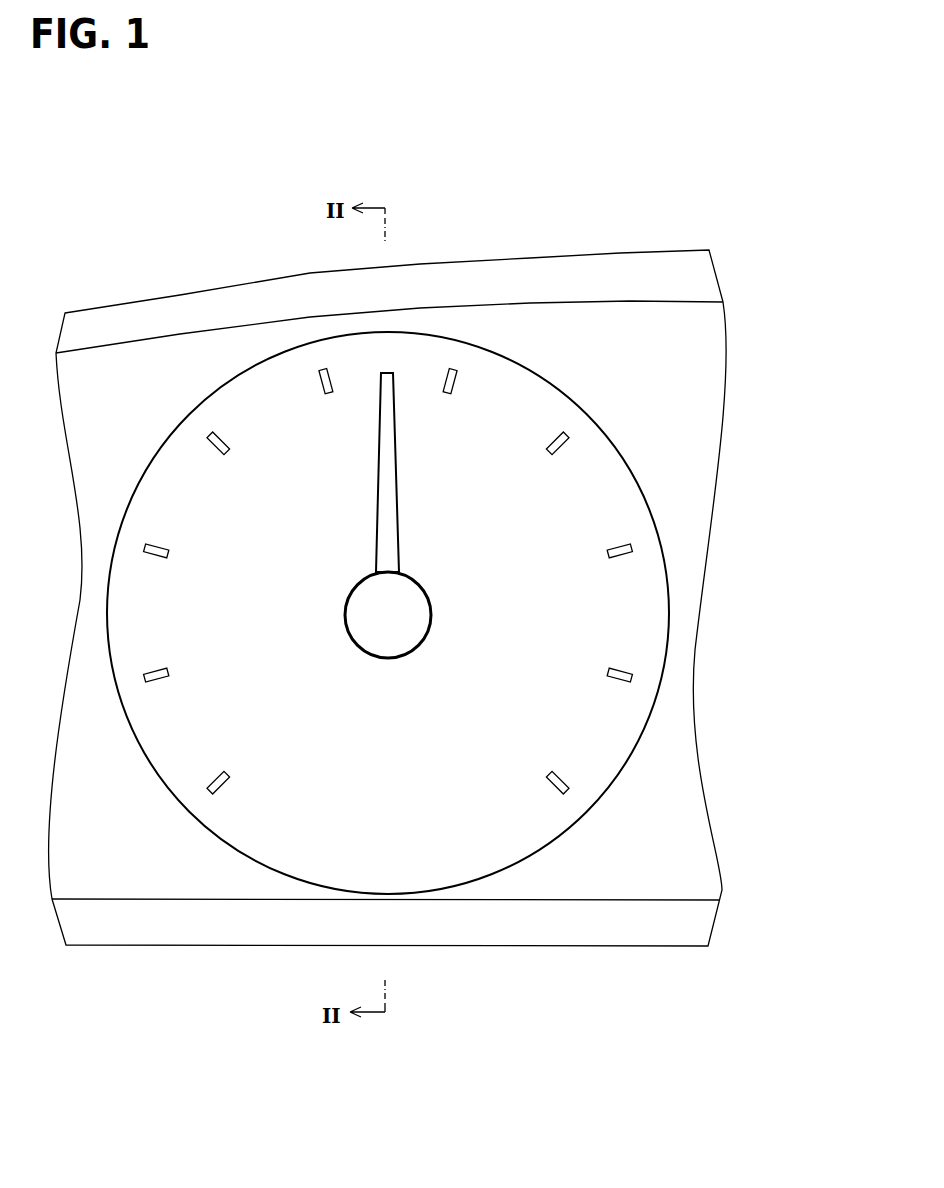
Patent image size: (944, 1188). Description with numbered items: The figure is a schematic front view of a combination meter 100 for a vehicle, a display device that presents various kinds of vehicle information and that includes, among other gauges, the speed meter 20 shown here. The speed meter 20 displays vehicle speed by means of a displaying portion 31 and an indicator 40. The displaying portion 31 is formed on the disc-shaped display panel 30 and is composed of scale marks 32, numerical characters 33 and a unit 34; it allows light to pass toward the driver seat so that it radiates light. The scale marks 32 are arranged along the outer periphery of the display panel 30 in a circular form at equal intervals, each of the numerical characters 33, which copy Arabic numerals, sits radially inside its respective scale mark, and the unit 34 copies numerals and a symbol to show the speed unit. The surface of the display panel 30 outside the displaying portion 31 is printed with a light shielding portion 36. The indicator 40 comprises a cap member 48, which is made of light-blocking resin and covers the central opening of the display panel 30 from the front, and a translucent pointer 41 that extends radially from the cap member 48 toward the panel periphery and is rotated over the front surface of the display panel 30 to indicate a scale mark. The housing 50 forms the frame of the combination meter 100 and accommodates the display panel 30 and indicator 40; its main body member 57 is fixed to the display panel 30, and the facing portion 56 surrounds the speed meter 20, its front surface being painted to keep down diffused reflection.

The combination meter 100 is at (744, 201).
The speed meter 20 is at (200, 368).
The display panel 30 is at (613, 720).
The displaying portion 31 is at (597, 1005).
The scale marks 32 is at (567, 797).
The numerical characters 33 is at (530, 768).
The unit 34 is at (423, 727).
The light shielding portion 36 is at (582, 750).
The indicator 40 is at (396, 410).
The pointer 41 is at (446, 389).
The cap member 48 is at (431, 615).
The housing 50 is at (722, 886).
The facing portion 56 is at (662, 797).
The main body member 57 is at (445, 600).